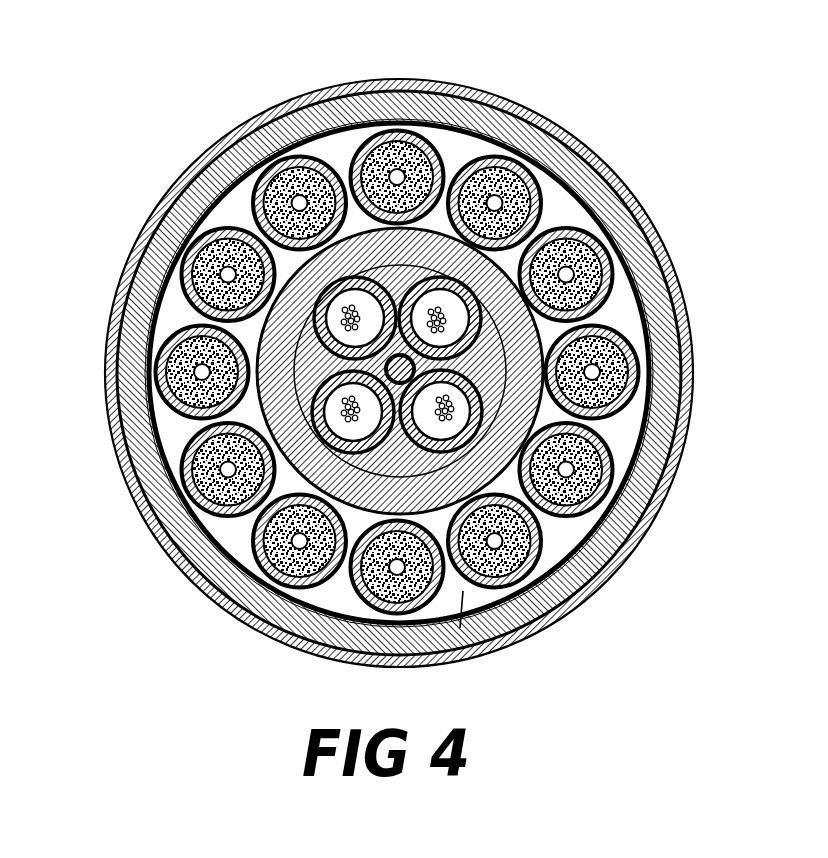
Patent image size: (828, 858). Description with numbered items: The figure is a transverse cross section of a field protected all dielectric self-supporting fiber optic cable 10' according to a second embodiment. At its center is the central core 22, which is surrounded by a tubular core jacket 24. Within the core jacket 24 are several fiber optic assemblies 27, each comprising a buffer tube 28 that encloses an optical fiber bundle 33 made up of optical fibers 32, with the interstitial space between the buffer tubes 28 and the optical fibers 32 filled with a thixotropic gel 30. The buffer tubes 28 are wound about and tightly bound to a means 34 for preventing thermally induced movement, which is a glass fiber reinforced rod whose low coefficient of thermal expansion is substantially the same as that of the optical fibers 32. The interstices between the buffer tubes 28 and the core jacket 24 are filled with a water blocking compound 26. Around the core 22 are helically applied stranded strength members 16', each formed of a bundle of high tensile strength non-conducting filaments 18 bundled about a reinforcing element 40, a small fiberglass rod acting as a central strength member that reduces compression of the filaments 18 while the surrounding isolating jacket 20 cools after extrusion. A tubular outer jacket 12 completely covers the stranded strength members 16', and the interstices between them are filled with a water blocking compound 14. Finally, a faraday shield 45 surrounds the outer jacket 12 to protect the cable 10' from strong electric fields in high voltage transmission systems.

The field protected all dielectric self-supporting fiber optic cable 10' is at (375, 357).
The faraday shield 45 is at (388, 71).
The outer jacket 12 is at (600, 570).
The stranded strength members 16' is at (399, 373).
The core jacket 24 is at (190, 510).
The central core 22 is at (627, 267).
The water blocking compound 14 is at (470, 640).
The water blocking compound 26 is at (612, 453).
The isolating jacket 20 is at (183, 250).
The filaments 18 is at (178, 293).
The reinforcing element 40 is at (555, 265).
The means for preventing thermally induced movement of the buffer tubes 34 is at (420, 342).
The fiber optic assemblies 27 is at (310, 308).
The buffer tubes 28 is at (312, 437).
The thixotropic gel 30 is at (360, 416).
The optical fibers 32 is at (432, 302).
The optical fiber bundle 33 is at (424, 416).